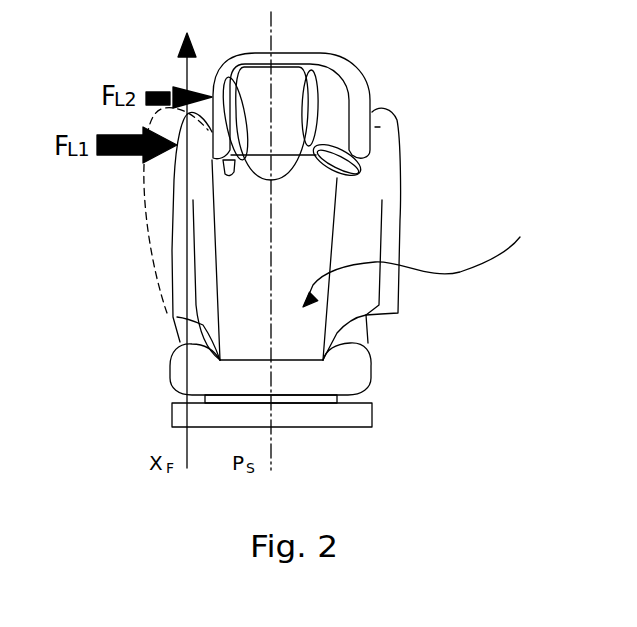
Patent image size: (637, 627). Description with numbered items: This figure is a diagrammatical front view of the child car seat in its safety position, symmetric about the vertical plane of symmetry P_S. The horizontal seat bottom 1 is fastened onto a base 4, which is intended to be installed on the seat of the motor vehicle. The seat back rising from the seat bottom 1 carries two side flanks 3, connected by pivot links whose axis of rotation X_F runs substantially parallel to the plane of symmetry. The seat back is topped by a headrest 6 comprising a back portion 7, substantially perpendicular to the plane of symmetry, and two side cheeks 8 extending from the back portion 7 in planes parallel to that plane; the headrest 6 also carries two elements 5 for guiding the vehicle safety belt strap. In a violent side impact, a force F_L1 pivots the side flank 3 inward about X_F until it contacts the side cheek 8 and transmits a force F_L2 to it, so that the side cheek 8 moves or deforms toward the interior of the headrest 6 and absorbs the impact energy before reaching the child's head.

The seat bottom 1 is at (376, 348).
The side flank 3 is at (408, 199).
The base 4 is at (383, 411).
The element for guiding a safety belt strap 5 is at (346, 152).
The headrest 6 is at (377, 100).
The back portion 7 is at (299, 72).
The side cheek 8 is at (337, 88).